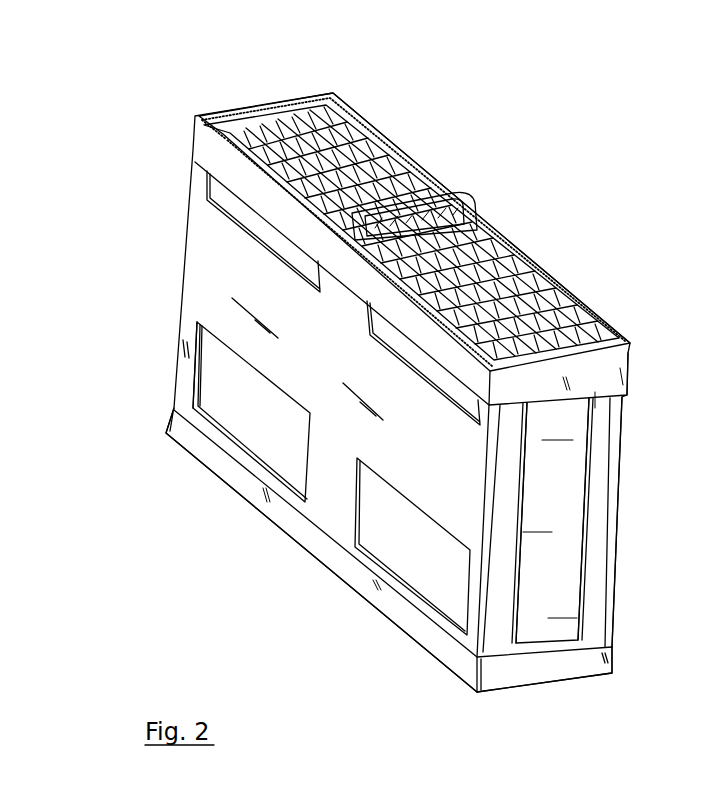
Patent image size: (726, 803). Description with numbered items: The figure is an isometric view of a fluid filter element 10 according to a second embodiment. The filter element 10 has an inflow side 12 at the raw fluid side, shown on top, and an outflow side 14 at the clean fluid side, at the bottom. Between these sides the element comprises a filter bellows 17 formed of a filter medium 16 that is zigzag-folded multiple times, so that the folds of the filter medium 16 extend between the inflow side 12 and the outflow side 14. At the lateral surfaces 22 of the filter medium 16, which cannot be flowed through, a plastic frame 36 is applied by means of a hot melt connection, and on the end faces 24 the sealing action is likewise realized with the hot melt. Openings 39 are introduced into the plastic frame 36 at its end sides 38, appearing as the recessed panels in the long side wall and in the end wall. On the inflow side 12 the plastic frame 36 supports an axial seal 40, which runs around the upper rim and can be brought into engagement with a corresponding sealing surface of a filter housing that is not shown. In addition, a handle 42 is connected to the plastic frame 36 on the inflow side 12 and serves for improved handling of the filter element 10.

The filter element 10 is at (132, 102).
The inflow side 12 is at (398, 122).
The outflow side 14 is at (342, 624).
The filter medium 16 is at (268, 453).
The filter bellows 17 is at (568, 537).
The lateral surfaces 22 is at (203, 378).
The end faces 24 is at (573, 507).
The plastic frame 36 is at (627, 407).
The end sides 38 is at (200, 283).
The openings 39 is at (393, 540).
The axial seal 40 is at (237, 110).
The handle 42 is at (457, 195).